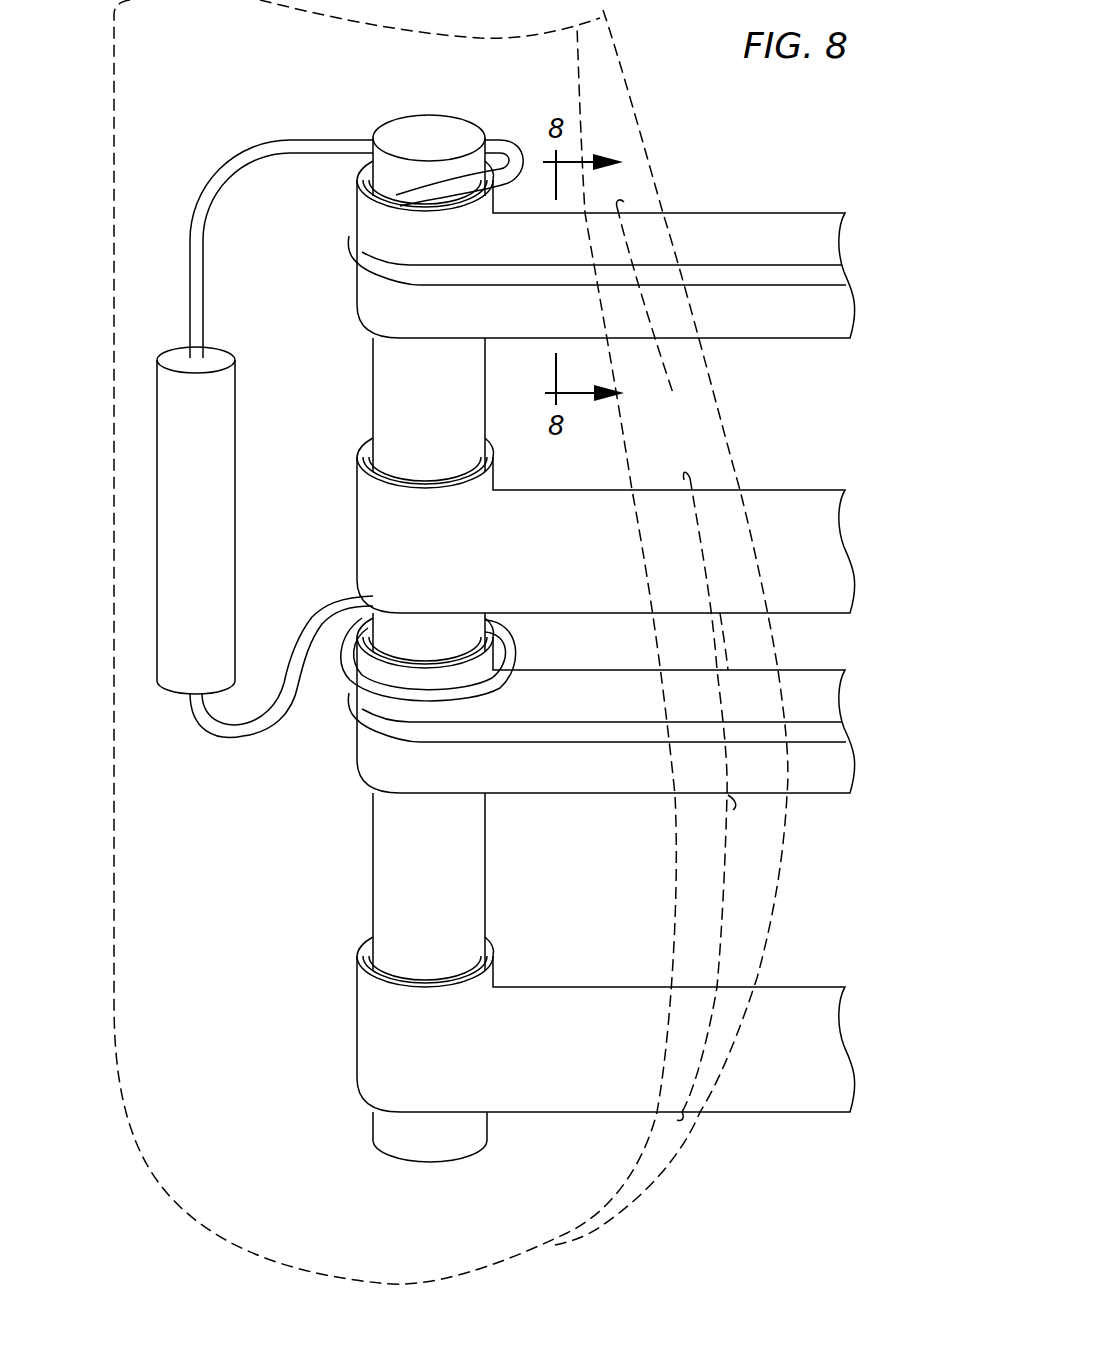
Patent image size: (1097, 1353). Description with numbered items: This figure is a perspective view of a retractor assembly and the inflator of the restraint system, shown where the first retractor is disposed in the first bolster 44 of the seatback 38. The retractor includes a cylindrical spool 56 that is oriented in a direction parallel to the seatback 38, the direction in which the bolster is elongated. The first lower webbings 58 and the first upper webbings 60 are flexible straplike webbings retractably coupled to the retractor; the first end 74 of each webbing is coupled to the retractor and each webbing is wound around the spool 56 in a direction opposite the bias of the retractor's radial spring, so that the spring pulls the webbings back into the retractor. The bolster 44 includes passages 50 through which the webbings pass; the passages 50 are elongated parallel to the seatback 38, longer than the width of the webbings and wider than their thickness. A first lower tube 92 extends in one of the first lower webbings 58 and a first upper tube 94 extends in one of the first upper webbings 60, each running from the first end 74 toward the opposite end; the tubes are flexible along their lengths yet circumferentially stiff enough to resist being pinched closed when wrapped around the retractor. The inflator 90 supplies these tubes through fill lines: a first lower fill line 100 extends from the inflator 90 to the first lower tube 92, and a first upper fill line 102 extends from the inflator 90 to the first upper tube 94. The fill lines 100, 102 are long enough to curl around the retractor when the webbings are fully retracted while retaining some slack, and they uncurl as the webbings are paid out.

The seatback 38 is at (113, 133).
The first bolster 44 is at (652, 150).
The passages 50 is at (727, 984).
The spool 56 is at (373, 357).
The first lower webbing 58 is at (548, 795).
The first upper webbing 60 is at (492, 340).
The first end 74 is at (368, 192).
The inflator 90 is at (210, 348).
The first lower tube 92 is at (528, 744).
The first upper tube 94 is at (530, 287).
The first lower fill line 100 is at (245, 740).
The first upper fill line 102 is at (264, 142).